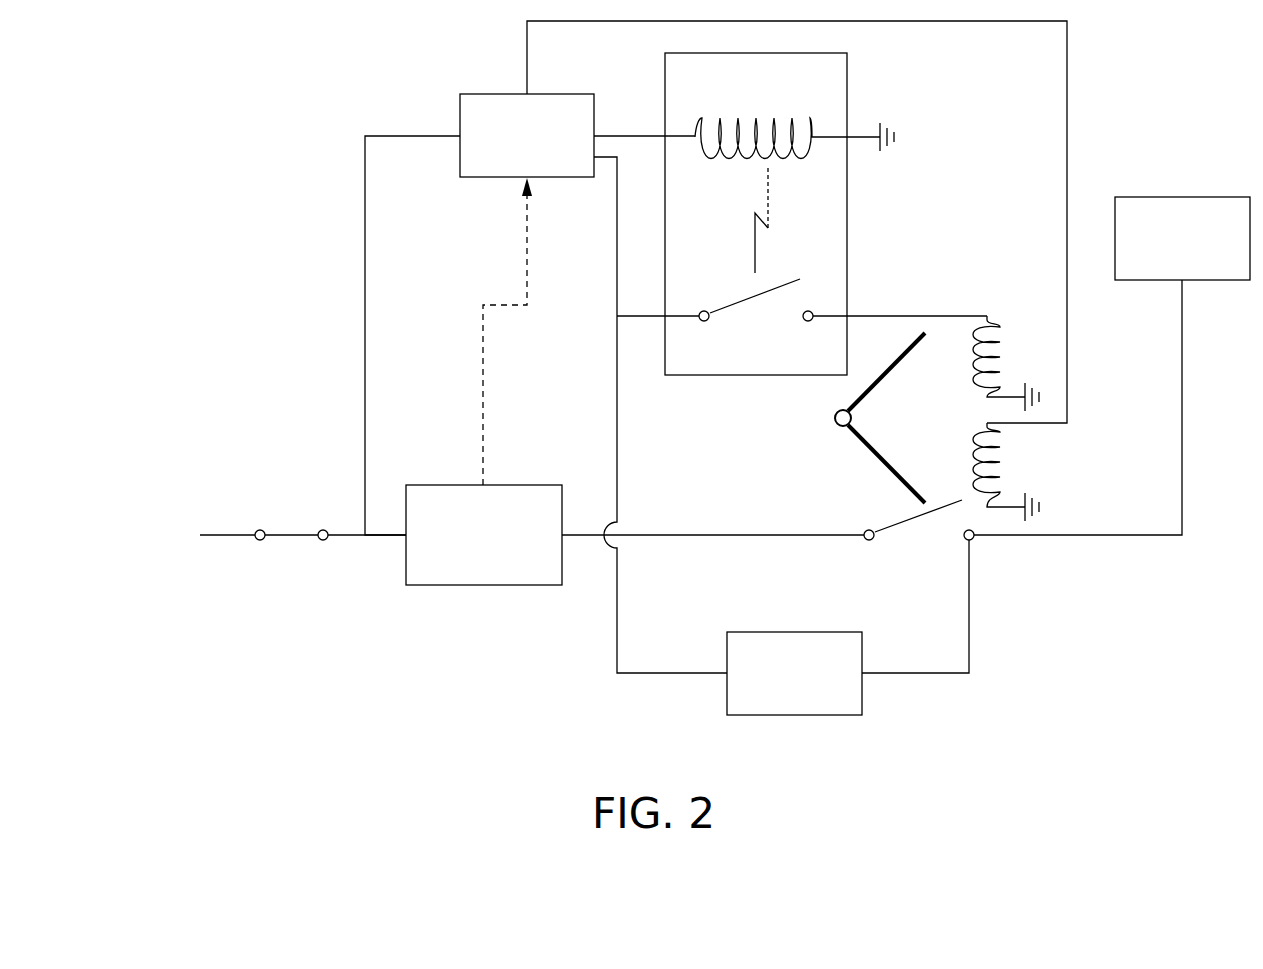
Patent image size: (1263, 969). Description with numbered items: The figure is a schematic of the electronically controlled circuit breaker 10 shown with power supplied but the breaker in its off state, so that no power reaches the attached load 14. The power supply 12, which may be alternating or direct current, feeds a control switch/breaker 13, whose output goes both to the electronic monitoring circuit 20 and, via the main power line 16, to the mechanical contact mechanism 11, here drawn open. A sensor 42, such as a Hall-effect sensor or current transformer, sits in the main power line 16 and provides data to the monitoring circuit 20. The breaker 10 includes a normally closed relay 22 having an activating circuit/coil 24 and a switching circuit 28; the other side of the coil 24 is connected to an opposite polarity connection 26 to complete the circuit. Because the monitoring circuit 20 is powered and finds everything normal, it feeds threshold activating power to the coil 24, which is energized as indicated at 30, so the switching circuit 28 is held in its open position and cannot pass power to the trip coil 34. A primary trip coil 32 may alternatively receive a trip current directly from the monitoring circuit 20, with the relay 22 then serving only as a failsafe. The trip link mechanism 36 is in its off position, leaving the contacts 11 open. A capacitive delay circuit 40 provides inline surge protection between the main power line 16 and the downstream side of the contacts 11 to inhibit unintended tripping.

The electronically controlled circuit breaker 10 is at (270, 186).
The mechanical contact mechanism 11 is at (905, 523).
The power supply 12 is at (150, 508).
The control switch/breaker 13 is at (298, 537).
The load 14 is at (1175, 197).
The main power line 16 is at (697, 537).
The electronic monitoring circuit 20 is at (478, 167).
The normally closed relay 22 is at (718, 362).
The activating circuit/coil 24 is at (812, 127).
The opposite polarity connection 26 is at (893, 150).
The switching circuit 28 is at (752, 300).
The energized state indication 30 is at (770, 207).
The primary trip coil 32 is at (1000, 453).
The trip coil 34 is at (997, 322).
The trip link mechanism 36 is at (893, 472).
The capacitive delay circuit 40 is at (790, 630).
The sensor 42 is at (510, 588).